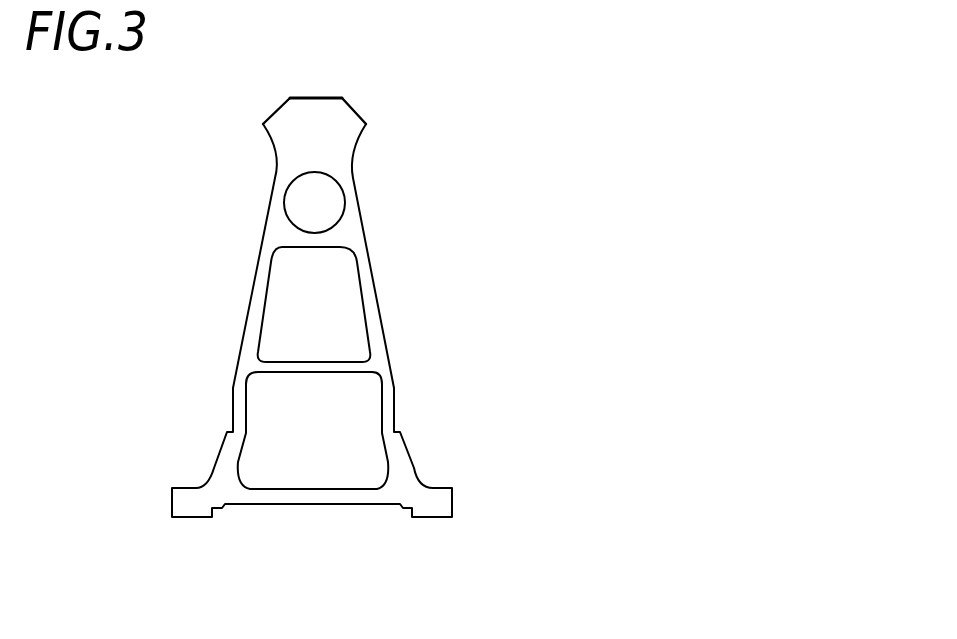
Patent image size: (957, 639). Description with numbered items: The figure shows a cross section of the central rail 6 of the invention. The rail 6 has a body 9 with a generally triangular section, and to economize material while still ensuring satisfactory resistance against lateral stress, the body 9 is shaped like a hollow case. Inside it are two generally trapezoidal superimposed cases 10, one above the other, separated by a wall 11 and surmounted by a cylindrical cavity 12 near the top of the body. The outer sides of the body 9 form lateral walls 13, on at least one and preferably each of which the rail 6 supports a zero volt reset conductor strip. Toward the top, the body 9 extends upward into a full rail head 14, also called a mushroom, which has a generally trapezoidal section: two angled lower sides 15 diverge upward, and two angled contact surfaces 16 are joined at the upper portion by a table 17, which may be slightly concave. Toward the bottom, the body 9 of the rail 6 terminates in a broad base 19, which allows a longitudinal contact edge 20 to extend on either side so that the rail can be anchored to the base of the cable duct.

The rail 6 is at (542, 273).
The body 9 is at (237, 313).
The superimposed cases 10 is at (335, 288).
The wall 11 is at (317, 367).
The cylindrical cavity 12 is at (313, 205).
The lateral walls 13 is at (233, 358).
The rail head 14 is at (408, 133).
The angled lower sides 15 is at (272, 142).
The angled contact surfaces 16 is at (276, 109).
The table 17 is at (312, 97).
The broad base 19 is at (203, 448).
The longitudinal contact edge 20 is at (185, 502).